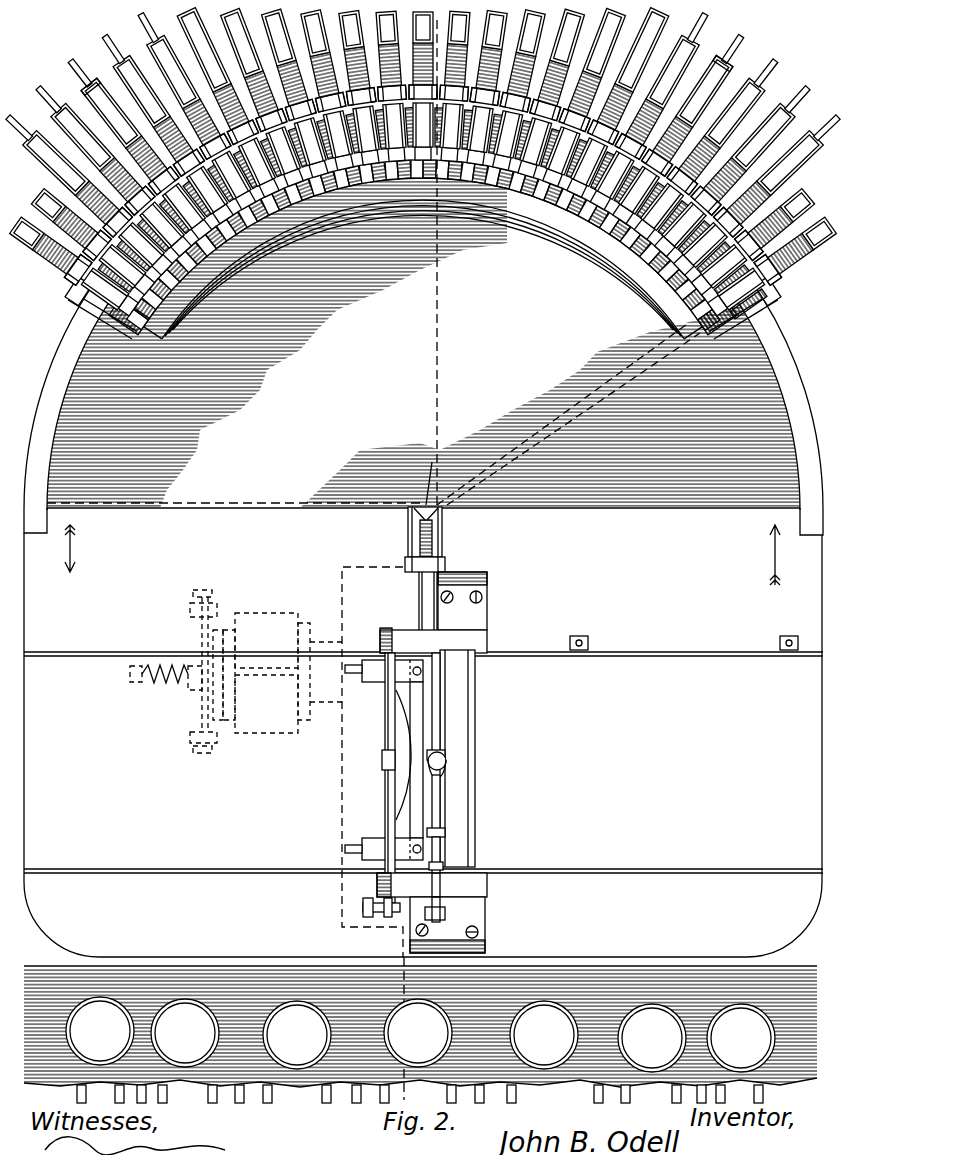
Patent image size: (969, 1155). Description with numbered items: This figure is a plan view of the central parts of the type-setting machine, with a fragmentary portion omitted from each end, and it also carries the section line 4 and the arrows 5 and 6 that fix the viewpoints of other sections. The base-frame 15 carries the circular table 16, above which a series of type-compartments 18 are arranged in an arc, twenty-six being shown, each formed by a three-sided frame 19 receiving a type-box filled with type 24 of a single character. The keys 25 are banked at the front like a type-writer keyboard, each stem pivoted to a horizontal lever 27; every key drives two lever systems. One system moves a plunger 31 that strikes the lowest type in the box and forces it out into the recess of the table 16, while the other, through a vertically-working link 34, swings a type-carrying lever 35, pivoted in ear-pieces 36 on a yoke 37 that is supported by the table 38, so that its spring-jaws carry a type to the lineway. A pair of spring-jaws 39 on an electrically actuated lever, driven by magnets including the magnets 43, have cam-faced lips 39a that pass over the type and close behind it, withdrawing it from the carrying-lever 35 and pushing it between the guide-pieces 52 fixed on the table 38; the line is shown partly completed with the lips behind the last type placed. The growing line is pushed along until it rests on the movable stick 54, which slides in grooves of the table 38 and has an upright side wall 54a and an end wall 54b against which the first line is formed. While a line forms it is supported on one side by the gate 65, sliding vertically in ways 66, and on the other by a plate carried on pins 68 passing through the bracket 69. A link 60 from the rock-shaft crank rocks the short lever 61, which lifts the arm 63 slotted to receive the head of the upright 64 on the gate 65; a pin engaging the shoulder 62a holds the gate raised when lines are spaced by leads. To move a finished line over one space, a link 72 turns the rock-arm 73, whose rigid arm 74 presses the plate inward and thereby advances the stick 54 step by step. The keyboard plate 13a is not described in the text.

The section line 4 4 is at (414, 1112).
The arrow 5 is at (63, 548).
The arrow 6 is at (774, 566).
The keyboard plate 13a is at (420, 1026).
The base-frame 15 is at (395, 160).
The circular table 16 is at (540, 175).
The type-compartments 18 is at (424, 170).
The three-sided frame 19 is at (108, 62).
The type 24 is at (420, 596).
The keys 25 is at (420, 1034).
The horizontal levers 27 is at (238, 1104).
The plunger 31 is at (66, 104).
The vertically-working link 34 is at (84, 276).
The type-carrying lever 35 is at (423, 317).
The ear-pieces 36 is at (423, 315).
The yoke 37 is at (423, 408).
The table 38 is at (423, 745).
The spring-jaws 39 is at (384, 523).
The lips 39a is at (563, 413).
The magnets 43 is at (236, 671).
The guide-pieces 52 is at (416, 580).
The movable stick 54 is at (323, 762).
The upright side wall 54a is at (290, 863).
The end wall 54b is at (476, 788).
The link 60 is at (446, 911).
The short lever 61 is at (442, 830).
The shoulder 62a is at (445, 868).
The arm 63 is at (441, 793).
The upright 64 is at (440, 762).
The gate 65 is at (441, 730).
The ways 66 is at (440, 672).
The pins 68 is at (354, 675).
The bracket 69 is at (380, 676).
The link 72 is at (365, 914).
The rock-arm 73 is at (386, 815).
The rigid arm 74 is at (400, 788).